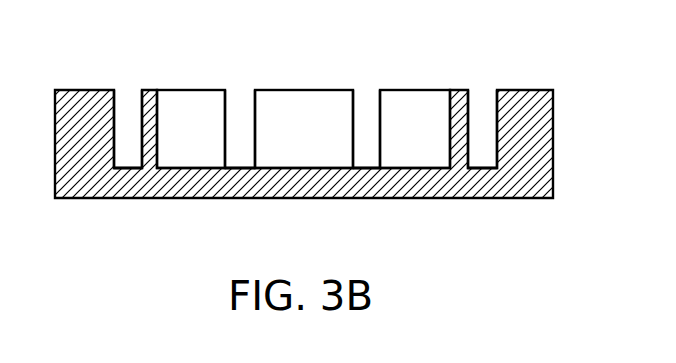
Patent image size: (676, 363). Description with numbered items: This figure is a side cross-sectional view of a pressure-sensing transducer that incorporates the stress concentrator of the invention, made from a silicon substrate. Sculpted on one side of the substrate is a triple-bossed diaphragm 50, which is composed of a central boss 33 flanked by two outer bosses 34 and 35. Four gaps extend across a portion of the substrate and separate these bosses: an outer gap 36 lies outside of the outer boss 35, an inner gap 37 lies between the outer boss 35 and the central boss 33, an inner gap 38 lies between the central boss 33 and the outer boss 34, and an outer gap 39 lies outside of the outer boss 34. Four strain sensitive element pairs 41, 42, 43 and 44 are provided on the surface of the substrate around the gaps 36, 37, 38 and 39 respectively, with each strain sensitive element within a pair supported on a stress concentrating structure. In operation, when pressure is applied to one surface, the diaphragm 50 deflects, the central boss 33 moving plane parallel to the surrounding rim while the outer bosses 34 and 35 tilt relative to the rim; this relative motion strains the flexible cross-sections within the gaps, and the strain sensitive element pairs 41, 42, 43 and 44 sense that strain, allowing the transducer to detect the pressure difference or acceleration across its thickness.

The central boss 33 is at (305, 97).
The outer boss 34 is at (425, 97).
The outer boss 35 is at (185, 97).
The outer gap 36 is at (127, 152).
The inner gap 37 is at (241, 152).
The inner gap 38 is at (367, 152).
The outer gap 39 is at (487, 148).
The strain sensitive element pair 41 is at (127, 97).
The strain sensitive element pair 42 is at (243, 96).
The strain sensitive element pair 43 is at (368, 97).
The strain sensitive element pair 44 is at (484, 96).
The triple-bossed diaphragm 50 is at (435, 180).